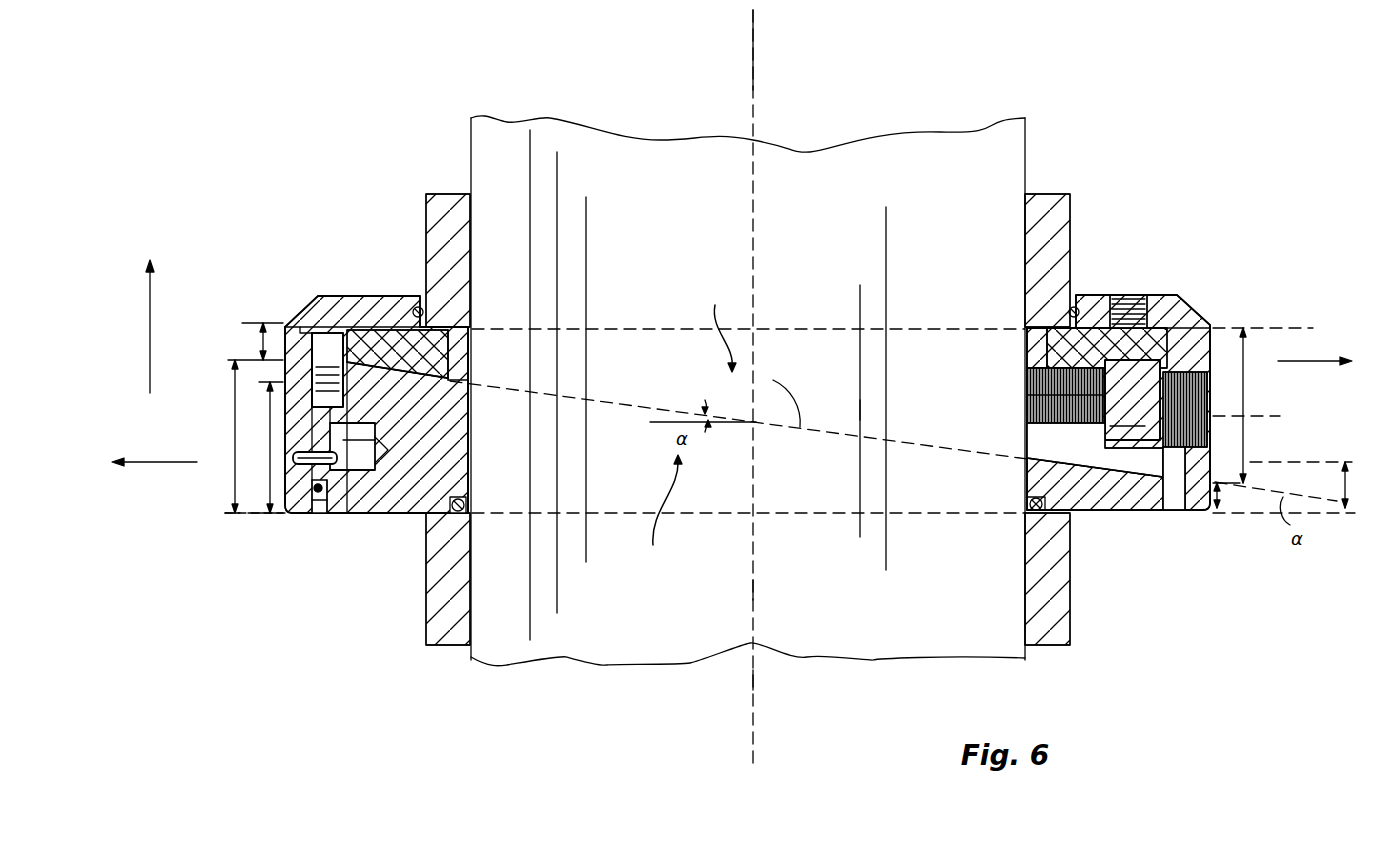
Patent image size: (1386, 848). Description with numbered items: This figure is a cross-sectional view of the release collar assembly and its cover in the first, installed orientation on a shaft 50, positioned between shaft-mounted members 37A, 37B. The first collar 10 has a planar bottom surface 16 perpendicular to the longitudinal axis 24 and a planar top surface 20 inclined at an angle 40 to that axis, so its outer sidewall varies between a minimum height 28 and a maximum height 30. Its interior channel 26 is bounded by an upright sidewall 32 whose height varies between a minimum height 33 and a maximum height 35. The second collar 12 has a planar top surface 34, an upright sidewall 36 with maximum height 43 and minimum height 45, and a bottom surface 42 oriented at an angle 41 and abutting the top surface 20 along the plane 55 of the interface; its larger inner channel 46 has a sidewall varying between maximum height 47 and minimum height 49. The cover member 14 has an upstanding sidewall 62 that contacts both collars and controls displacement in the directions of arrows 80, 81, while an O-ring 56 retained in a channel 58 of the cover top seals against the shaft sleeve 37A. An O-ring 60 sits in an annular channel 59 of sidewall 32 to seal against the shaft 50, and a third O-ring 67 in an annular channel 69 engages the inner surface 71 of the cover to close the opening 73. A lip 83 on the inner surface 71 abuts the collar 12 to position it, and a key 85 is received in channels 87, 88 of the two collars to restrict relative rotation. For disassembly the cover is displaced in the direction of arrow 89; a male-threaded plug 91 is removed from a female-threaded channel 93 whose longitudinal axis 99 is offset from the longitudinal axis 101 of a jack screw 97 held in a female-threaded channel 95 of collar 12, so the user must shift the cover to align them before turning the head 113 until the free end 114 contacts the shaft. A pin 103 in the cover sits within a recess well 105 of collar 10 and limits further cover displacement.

The first collar 10 is at (470, 440).
The second collar 12 is at (455, 345).
The cover member 14 is at (297, 350).
The bottom surface 16 is at (800, 514).
The top surface 20 is at (940, 447).
The longitudinal axis 24 is at (753, 733).
The channel 26 is at (655, 512).
The minimum height 28 is at (1225, 485).
The maximum height 30 is at (235, 430).
The upright sidewall 32 is at (470, 405).
The minimum height 33 is at (1345, 468).
The top surface 34 is at (662, 329).
The maximum height 35 is at (740, 683).
The upright sidewall 36 is at (755, 590).
The shaft-mounted member 37A is at (426, 205).
The shaft-mounted member 37B is at (426, 595).
The angle 40 is at (756, 375).
The angle 41 is at (818, 395).
The bottom surface 42 is at (640, 405).
The maximum height 43 is at (1245, 400).
The minimum height 45 is at (263, 340).
The inner channel 46 is at (719, 325).
The maximum height 47 is at (1035, 365).
The minimum height 49 is at (446, 372).
The shaft 50 is at (495, 145).
The plane of the interface 55 is at (837, 433).
The O-ring 56 is at (421, 314).
The channel 58 is at (412, 327).
The annular channel 59 is at (412, 517).
The O-ring 60 is at (464, 513).
The upstanding sidewall 62 is at (290, 330).
The third O-ring 67 is at (318, 500).
The annular channel 69 is at (325, 497).
The inner surface 71 is at (1147, 380).
The opening 73 is at (312, 507).
The arrow 80 is at (148, 462).
The arrow 81 is at (1315, 360).
The lip 83 is at (300, 355).
The key 85 is at (360, 400).
The channel 87 is at (753, 85).
The channel 88 is at (336, 335).
The arrow 89 is at (150, 327).
The male-threaded plug 91 is at (1205, 400).
The female-threaded channel 93 is at (1200, 445).
The female-threaded channel 95 is at (1030, 460).
The jack screw 97 is at (1025, 415).
The longitudinal axis 99 is at (1285, 415).
The longitudinal axis 101 is at (1025, 405).
The pin 103 is at (350, 470).
The recess well 105 is at (402, 447).
The head 113 is at (1127, 412).
The free end 114 is at (1025, 390).